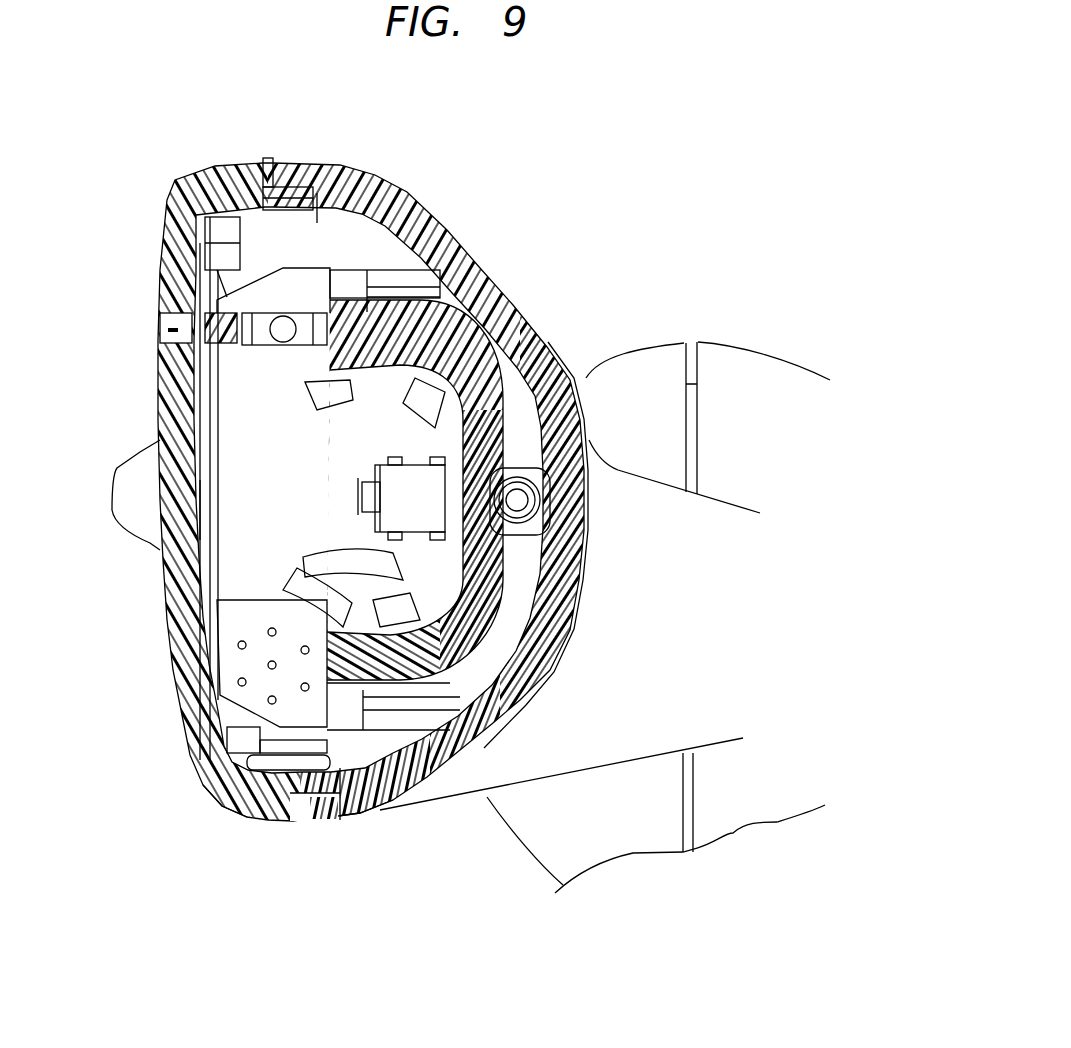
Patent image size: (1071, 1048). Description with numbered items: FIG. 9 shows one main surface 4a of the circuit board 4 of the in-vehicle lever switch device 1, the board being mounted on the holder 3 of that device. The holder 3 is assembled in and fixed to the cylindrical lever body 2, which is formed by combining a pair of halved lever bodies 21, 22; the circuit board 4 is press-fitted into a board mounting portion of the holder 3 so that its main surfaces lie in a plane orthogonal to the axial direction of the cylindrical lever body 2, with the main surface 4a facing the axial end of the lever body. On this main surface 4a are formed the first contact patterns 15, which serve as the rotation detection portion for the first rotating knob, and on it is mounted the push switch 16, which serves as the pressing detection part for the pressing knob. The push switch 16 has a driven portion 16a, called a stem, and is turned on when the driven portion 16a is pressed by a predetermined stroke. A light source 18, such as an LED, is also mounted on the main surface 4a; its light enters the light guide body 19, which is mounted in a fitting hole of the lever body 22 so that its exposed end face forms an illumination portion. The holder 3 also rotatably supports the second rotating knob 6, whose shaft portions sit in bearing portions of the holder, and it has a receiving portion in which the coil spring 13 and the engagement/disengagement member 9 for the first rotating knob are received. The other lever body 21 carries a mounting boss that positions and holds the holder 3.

The in-vehicle lever switch device 1 is at (682, 279).
The cylindrical lever body 2 is at (308, 892).
The holder 3 is at (402, 318).
The circuit board 4 is at (298, 262).
The main surface 4a is at (258, 510).
The second rotating knob 6 is at (140, 467).
The engagement/disengagement member 9 is at (517, 500).
The coil spring 13 is at (540, 512).
The first contact patterns 15 is at (430, 400).
The push switch 16 is at (413, 480).
The driven portion 16a is at (545, 598).
The light source 18 is at (283, 332).
The light guide body 19 is at (168, 330).
The lever body 21 is at (372, 800).
The lever body 22 is at (270, 819).